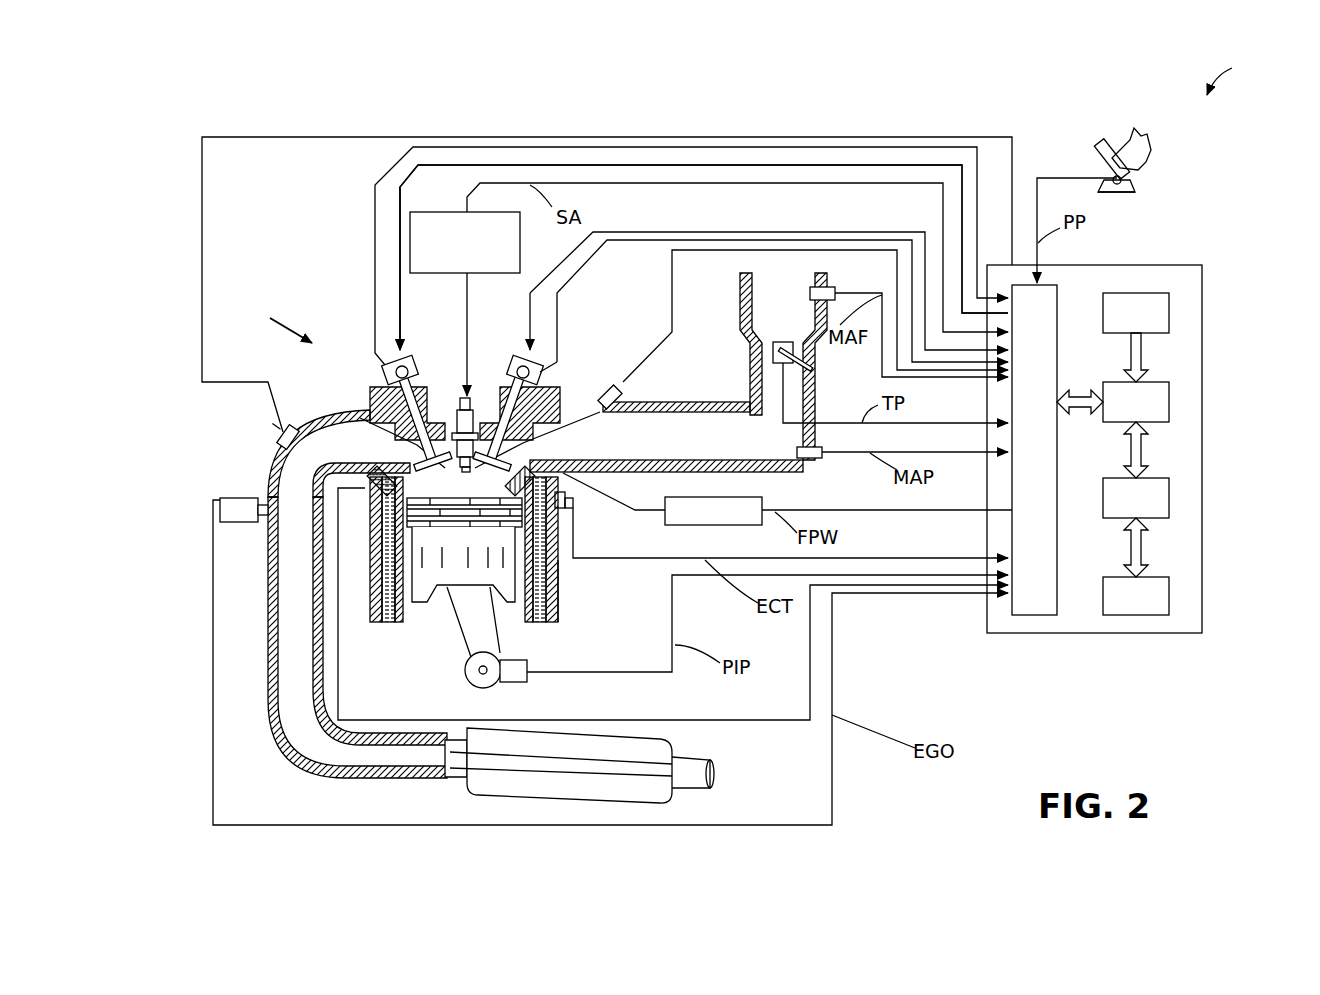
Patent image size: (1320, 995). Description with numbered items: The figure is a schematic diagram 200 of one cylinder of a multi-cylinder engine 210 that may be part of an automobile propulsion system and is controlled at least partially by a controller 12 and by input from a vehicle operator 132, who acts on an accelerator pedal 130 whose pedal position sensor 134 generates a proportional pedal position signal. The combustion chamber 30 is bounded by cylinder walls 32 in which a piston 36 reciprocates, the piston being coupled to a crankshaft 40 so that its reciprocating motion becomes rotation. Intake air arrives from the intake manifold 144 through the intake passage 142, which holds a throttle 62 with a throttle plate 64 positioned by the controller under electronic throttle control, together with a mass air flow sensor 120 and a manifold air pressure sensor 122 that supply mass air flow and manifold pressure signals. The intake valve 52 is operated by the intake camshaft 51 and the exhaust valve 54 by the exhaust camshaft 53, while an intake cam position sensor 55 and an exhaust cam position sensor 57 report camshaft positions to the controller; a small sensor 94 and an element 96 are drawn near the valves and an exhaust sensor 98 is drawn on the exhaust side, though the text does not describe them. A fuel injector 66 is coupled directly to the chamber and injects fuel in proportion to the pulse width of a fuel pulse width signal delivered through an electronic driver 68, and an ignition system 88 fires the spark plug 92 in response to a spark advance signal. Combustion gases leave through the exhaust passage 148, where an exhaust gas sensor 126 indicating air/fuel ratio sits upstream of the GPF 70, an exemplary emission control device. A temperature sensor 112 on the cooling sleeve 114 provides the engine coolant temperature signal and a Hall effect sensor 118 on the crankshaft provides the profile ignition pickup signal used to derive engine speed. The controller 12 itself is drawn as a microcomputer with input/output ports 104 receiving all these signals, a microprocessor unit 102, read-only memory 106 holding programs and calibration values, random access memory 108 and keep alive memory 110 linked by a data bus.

The schematic diagram 200 is at (1241, 74).
The engine 210 is at (269, 318).
The controller 12 is at (1195, 265).
The input/output ports 104 is at (1060, 295).
The read-only memory 106 is at (1185, 305).
The microprocessor unit 102 is at (1185, 400).
The random access memory 108 is at (1185, 495).
The keep alive memory 110 is at (1185, 595).
The accelerator pedal 130 is at (1103, 160).
The vehicle operator 132 is at (1145, 145).
The pedal position sensor 134 is at (1125, 178).
The ignition system 88 is at (413, 212).
The exhaust camshaft 53 is at (400, 358).
The intake camshaft 51 is at (523, 358).
The exhaust cam position sensor 57 is at (385, 376).
The exhaust valve 54 is at (372, 430).
The spark plug 92 is at (466, 400).
The intake cam position sensor 55 is at (540, 372).
The intake valve 52 is at (505, 450).
The intake port sensor 94 is at (617, 390).
The throttle plate 64 is at (768, 348).
The throttle 62 is at (800, 352).
The mass air flow sensor 120 is at (828, 287).
The intake passage 142 is at (783, 366).
The intake manifold 144 is at (666, 437).
The exhaust passage 148 is at (339, 453).
The exhaust sensor 98 is at (285, 436).
The exhaust gas sensor 126 is at (213, 500).
The exhaust valve guide 96 is at (372, 485).
The fuel injector 66 is at (580, 487).
The temperature sensor 112 is at (567, 505).
The electronic driver 68 is at (692, 527).
The combustion chamber 30 is at (460, 478).
The cylinder walls 32 is at (410, 606).
The piston 36 is at (448, 575).
The crankshaft 40 is at (475, 683).
The cooling sleeve 114 is at (560, 578).
The Hall effect sensor 118 is at (517, 684).
The manifold air pressure sensor 122 is at (815, 460).
The GPF 70 is at (665, 803).